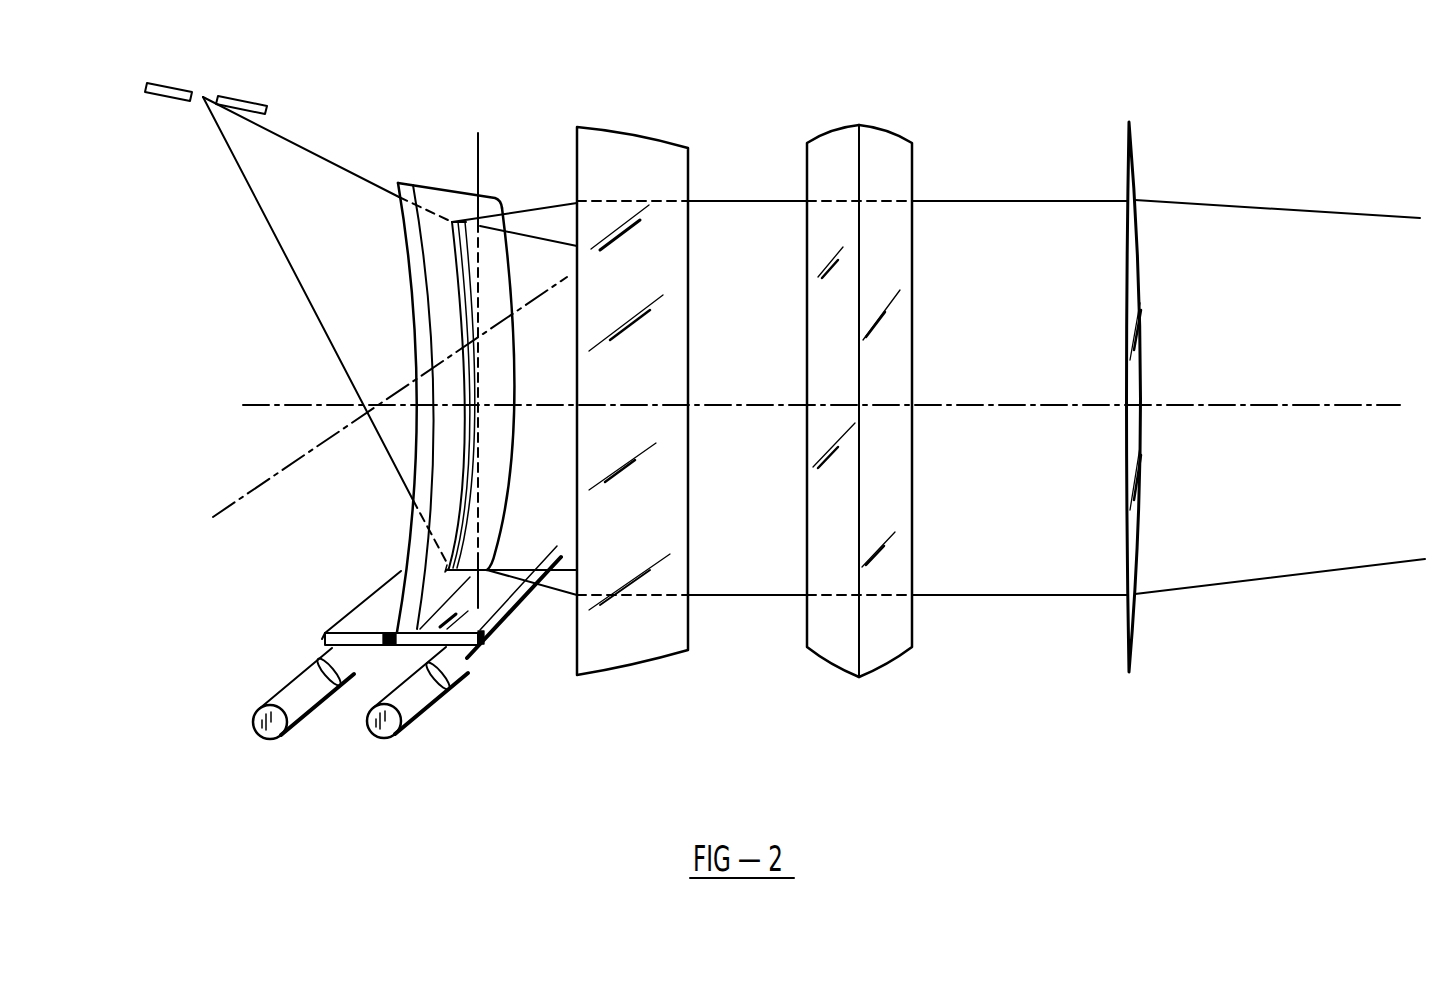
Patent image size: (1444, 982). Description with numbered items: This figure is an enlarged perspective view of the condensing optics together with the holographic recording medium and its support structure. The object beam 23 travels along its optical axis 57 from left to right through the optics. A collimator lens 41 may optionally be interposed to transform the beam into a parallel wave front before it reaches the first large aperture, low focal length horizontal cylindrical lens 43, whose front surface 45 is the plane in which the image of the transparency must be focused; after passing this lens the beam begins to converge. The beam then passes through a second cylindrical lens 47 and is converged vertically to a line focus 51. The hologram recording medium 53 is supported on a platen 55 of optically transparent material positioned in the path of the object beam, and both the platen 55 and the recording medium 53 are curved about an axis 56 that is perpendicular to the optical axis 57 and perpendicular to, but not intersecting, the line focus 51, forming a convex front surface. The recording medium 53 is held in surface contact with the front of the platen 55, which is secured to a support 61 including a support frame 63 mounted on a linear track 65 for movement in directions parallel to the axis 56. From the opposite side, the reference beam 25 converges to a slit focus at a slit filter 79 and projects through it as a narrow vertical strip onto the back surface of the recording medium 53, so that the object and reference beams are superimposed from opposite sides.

The object beam 23 is at (965, 267).
The reference beam 25 is at (298, 222).
The collimator lens 41 is at (1134, 632).
The first horizontal cylindrical lens 43 is at (815, 657).
The front surface of lens 43 45 is at (885, 635).
The second cylindrical lens 47 is at (607, 640).
The line focus 51 is at (480, 155).
The hologram recording medium 53 is at (451, 306).
The platen 55 is at (412, 571).
The axis 56 is at (238, 505).
The optical axis 57 is at (262, 405).
The support 61 is at (190, 695).
The support frame 63 is at (323, 639).
The linear track 65 is at (251, 722).
The slit filter 79 is at (180, 99).